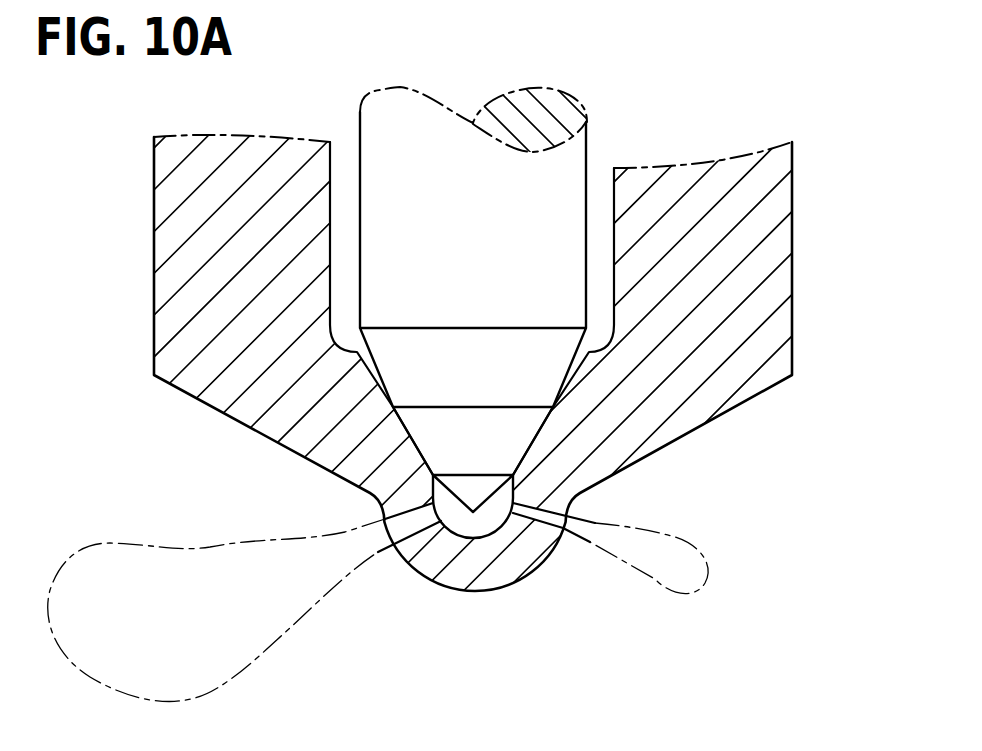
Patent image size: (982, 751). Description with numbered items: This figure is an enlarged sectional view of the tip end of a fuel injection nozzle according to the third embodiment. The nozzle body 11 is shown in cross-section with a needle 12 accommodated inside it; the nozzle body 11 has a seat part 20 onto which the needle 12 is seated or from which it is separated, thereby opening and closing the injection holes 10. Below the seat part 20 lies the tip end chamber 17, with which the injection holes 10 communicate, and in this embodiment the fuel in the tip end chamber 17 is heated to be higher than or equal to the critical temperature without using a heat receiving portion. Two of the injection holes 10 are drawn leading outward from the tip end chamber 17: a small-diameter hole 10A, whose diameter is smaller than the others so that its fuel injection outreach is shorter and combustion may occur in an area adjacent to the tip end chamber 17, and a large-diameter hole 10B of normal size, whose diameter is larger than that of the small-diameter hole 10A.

The nozzle body 11 is at (770, 200).
The needle 12 is at (540, 193).
The tip end chamber 17 is at (487, 522).
The seat part 20 is at (537, 449).
The injection holes 10 is at (389, 593).
The small-diameter hole 10A is at (595, 523).
The large-diameter hole 10B is at (413, 532).